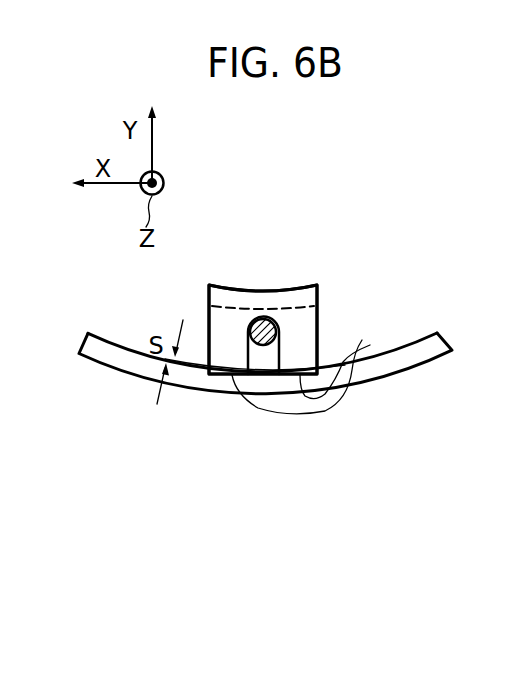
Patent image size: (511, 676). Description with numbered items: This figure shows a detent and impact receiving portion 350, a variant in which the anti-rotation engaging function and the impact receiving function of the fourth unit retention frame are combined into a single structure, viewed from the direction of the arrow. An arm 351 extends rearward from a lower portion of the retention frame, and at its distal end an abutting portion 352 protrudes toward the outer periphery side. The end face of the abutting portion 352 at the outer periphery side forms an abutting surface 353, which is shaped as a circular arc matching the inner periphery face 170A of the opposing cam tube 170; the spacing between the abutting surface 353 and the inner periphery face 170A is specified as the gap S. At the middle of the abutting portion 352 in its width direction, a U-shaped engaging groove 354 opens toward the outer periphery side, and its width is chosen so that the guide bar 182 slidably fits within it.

The cam tube 170 is at (208, 392).
The inner periphery face 170A is at (136, 348).
The guide bar 182 is at (264, 316).
The detent and impact receiving portion 350 is at (403, 189).
The arm 351 is at (320, 312).
The abutting portion 352 is at (298, 328).
The abutting surface 353 is at (317, 368).
The engaging groove 354 is at (278, 360).